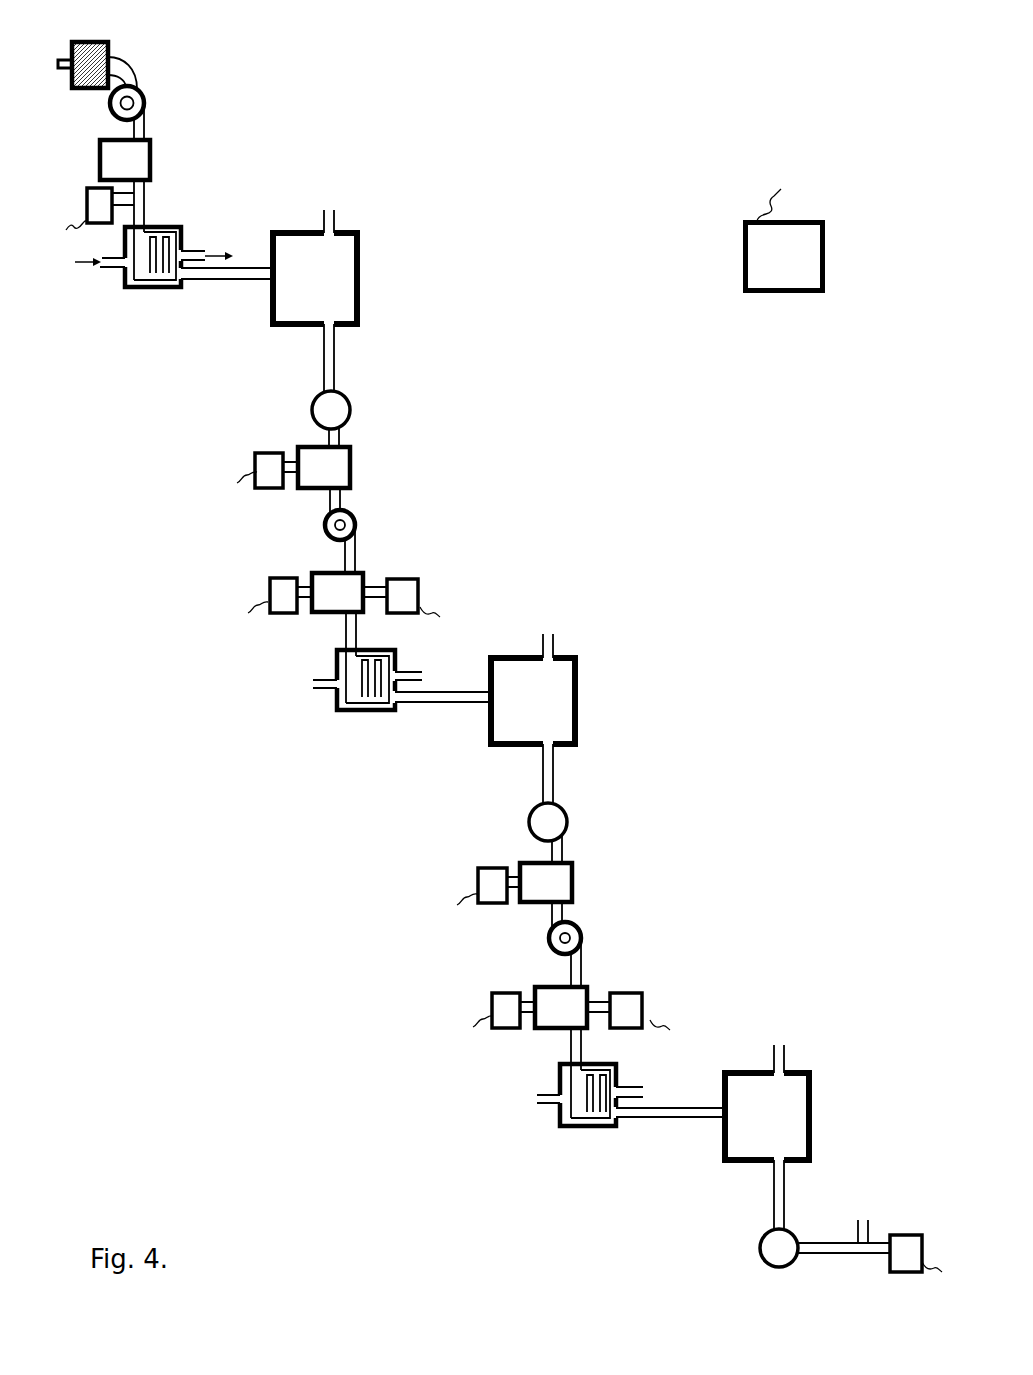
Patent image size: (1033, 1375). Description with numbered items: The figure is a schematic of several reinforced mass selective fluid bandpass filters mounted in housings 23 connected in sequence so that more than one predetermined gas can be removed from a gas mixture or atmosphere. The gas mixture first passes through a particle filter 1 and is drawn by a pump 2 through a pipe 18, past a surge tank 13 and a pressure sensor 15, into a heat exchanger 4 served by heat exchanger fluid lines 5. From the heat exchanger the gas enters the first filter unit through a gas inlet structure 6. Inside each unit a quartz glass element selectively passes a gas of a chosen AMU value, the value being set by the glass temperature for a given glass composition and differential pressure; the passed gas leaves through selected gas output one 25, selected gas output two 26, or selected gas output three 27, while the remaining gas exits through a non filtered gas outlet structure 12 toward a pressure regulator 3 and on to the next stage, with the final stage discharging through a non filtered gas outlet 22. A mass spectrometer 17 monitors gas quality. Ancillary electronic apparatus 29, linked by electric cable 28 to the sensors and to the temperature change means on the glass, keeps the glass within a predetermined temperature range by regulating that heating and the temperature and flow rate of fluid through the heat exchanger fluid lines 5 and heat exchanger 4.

The particle filter 1 is at (72, 48).
The pump 2 is at (110, 103).
The pressure regulator 3 is at (352, 410).
The heat exchanger 4 is at (145, 291).
The heat exchanger fluid lines 5 is at (102, 269).
The gas inlet structure 6 is at (230, 283).
The non filtered gas outlet structure 12 is at (318, 353).
The surge tank 13 is at (100, 158).
The pressure sensor 15 is at (87, 194).
The mass spectrometer 17 is at (420, 587).
The pipe 18 is at (148, 200).
The non filtered gas outlet 22 is at (863, 1216).
The reinforced mass selective fluid bandpass filter mounted in housing 23 is at (365, 250).
The selected gas output one 25 is at (327, 210).
The selected gas output two 26 is at (548, 632).
The selected gas output three 27 is at (779, 1045).
The electric cable 28 is at (66, 230).
The ancillary electronic apparatus 29 is at (828, 252).